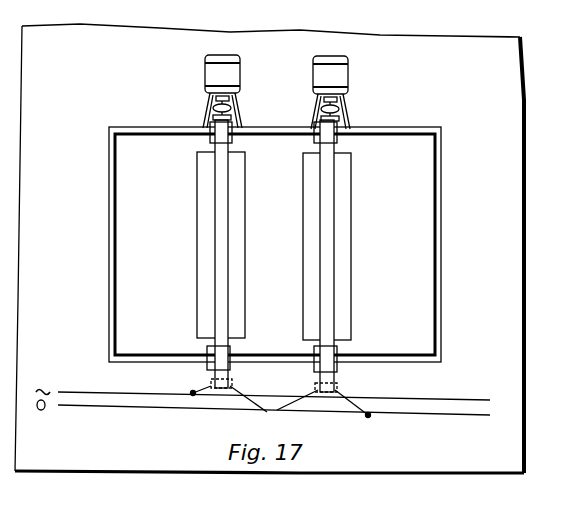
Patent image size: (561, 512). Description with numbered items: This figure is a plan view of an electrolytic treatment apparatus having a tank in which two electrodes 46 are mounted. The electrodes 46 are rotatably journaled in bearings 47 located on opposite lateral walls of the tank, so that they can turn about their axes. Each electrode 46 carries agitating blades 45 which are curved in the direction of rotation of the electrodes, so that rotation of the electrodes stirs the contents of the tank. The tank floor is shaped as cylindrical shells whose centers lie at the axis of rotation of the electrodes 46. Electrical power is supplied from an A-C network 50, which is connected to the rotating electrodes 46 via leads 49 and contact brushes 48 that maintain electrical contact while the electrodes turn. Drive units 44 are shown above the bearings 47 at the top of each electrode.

The drive motor 44 is at (215, 75).
The agitating blades 45 is at (345, 213).
The electrodes 46 is at (330, 268).
The bearings 47 is at (272, 247).
The contact brushes 48 is at (280, 410).
The leads 49 is at (193, 392).
The A-C network 50 is at (122, 405).